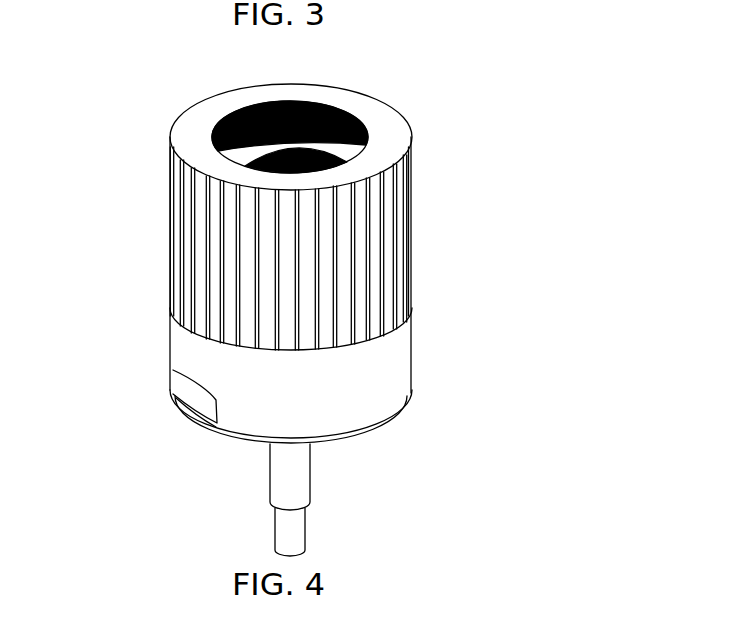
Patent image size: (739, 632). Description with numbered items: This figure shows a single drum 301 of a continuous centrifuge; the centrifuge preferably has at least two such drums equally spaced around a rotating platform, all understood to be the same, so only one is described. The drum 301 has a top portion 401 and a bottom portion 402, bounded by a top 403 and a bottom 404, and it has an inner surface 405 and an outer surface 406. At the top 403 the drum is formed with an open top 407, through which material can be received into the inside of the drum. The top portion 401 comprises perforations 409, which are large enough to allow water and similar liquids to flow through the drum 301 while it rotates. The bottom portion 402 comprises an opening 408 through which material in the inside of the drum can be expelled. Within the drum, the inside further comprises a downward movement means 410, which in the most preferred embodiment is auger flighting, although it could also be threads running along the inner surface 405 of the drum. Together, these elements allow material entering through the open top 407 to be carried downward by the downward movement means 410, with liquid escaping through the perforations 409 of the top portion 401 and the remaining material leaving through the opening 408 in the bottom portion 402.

The drum 301 is at (434, 120).
The top portion 401 is at (135, 216).
The bottom portion 402 is at (427, 351).
The top 403 is at (188, 90).
The bottom 404 is at (369, 453).
The inner surface 405 is at (298, 84).
The outer surface 406 is at (137, 332).
The open top 407 is at (334, 110).
The opening 408 is at (155, 426).
The perforations 409 is at (426, 228).
The downward movement means 410 is at (283, 130).